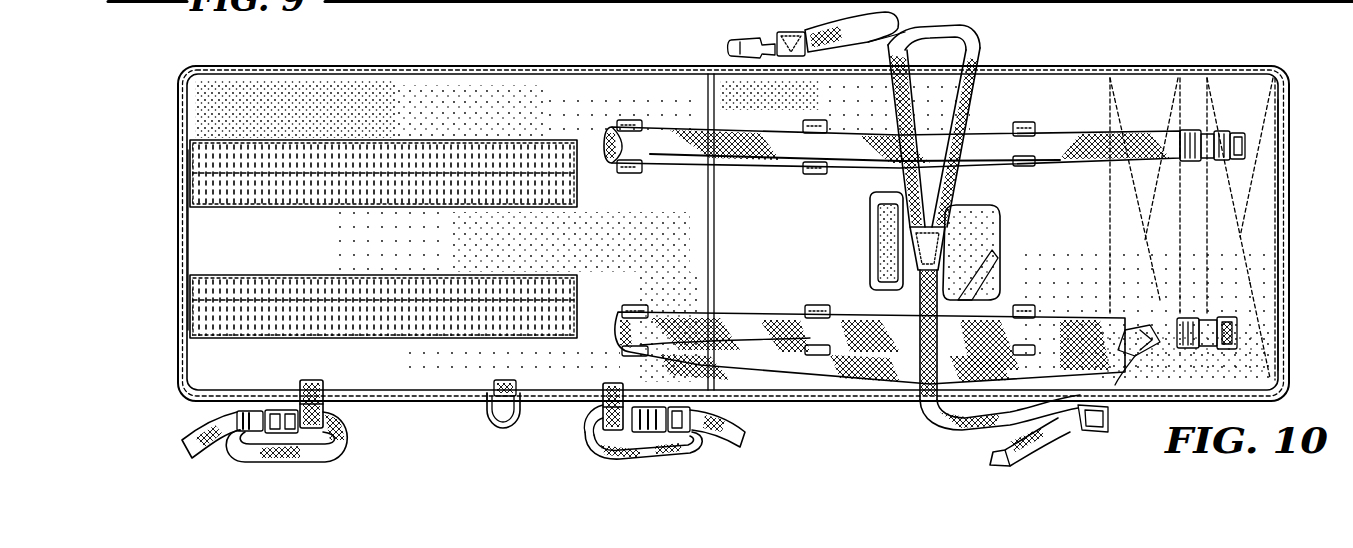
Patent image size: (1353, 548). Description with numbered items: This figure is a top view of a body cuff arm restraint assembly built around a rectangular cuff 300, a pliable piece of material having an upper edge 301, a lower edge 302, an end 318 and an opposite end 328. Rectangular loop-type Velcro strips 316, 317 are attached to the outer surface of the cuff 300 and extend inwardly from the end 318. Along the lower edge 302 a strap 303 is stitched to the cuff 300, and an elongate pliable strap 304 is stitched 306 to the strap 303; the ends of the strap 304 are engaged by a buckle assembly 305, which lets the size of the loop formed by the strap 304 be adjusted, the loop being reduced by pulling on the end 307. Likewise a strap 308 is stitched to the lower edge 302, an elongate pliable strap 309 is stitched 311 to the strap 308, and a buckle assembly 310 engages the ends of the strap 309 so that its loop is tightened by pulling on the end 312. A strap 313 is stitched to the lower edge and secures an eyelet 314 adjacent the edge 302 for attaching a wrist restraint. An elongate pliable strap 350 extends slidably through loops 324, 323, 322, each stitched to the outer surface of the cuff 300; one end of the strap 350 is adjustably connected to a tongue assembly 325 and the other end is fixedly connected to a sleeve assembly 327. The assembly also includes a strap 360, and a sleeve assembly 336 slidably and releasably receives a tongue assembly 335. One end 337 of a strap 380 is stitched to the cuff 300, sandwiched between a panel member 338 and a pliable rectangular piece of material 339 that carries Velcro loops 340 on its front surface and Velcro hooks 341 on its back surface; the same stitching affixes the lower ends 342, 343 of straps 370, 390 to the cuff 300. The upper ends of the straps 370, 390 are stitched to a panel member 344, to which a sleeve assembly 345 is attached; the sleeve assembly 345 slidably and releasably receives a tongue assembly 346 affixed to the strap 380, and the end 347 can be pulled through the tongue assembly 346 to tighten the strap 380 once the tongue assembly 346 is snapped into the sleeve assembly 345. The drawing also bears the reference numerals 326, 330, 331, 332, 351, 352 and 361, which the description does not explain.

The rectangular cuff 300 is at (175, 98).
The upper edge 301 is at (383, 77).
The lower edge 302 is at (484, 395).
The strap 303 is at (300, 384).
The elongate pliable strap 304 is at (310, 452).
The buckle assembly 305 is at (218, 410).
The stitching 306 is at (330, 410).
The end of strap 307 is at (186, 456).
The strap 308 is at (620, 386).
The elongate pliable strap 309 is at (605, 458).
The buckle assembly 310 is at (700, 405).
The stitching 311 is at (600, 408).
The end of strap 312 is at (735, 445).
The strap 313 is at (494, 385).
The eyelet 314 is at (492, 410).
The loop Velcro strip 316 is at (540, 135).
The loop Velcro strip 317 is at (332, 270).
The end of cuff 318 is at (182, 250).
The loop 322 is at (1032, 122).
The loop 323 is at (812, 122).
The loop 324 is at (612, 130).
The tongue assembly 325 is at (1222, 131).
The buckle part 326 is at (1182, 135).
The sleeve assembly 327 is at (1245, 160).
The end of cuff 328 is at (1283, 262).
The strap loop 330 is at (634, 303).
The strap loop 331 is at (816, 303).
The strap loop 332 is at (1028, 304).
The tongue assembly 335 is at (1140, 332).
The sleeve assembly 336 is at (1225, 318).
The end of strap 337 is at (918, 300).
The panel member 338 is at (940, 223).
The pliable rectangular piece of material 339 is at (1005, 215).
The Velcro loops 340 is at (868, 222).
The Velcro hooks 341 is at (985, 265).
The lower end of strap 342 is at (900, 120).
The lower end of strap 343 is at (960, 122).
The panel member 344 is at (780, 36).
The sleeve assembly 345 is at (730, 47).
The tongue assembly 346 is at (1104, 428).
The end of strap 347 is at (990, 462).
The elongate pliable strap 350 is at (685, 133).
The stitch line 351 is at (1160, 162).
The strap portion 352 is at (1115, 388).
The strap 360 is at (730, 306).
The fold line 361 is at (715, 218).
The strap 370 is at (818, 46).
The strap 380 is at (942, 430).
The strap 390 is at (985, 40).